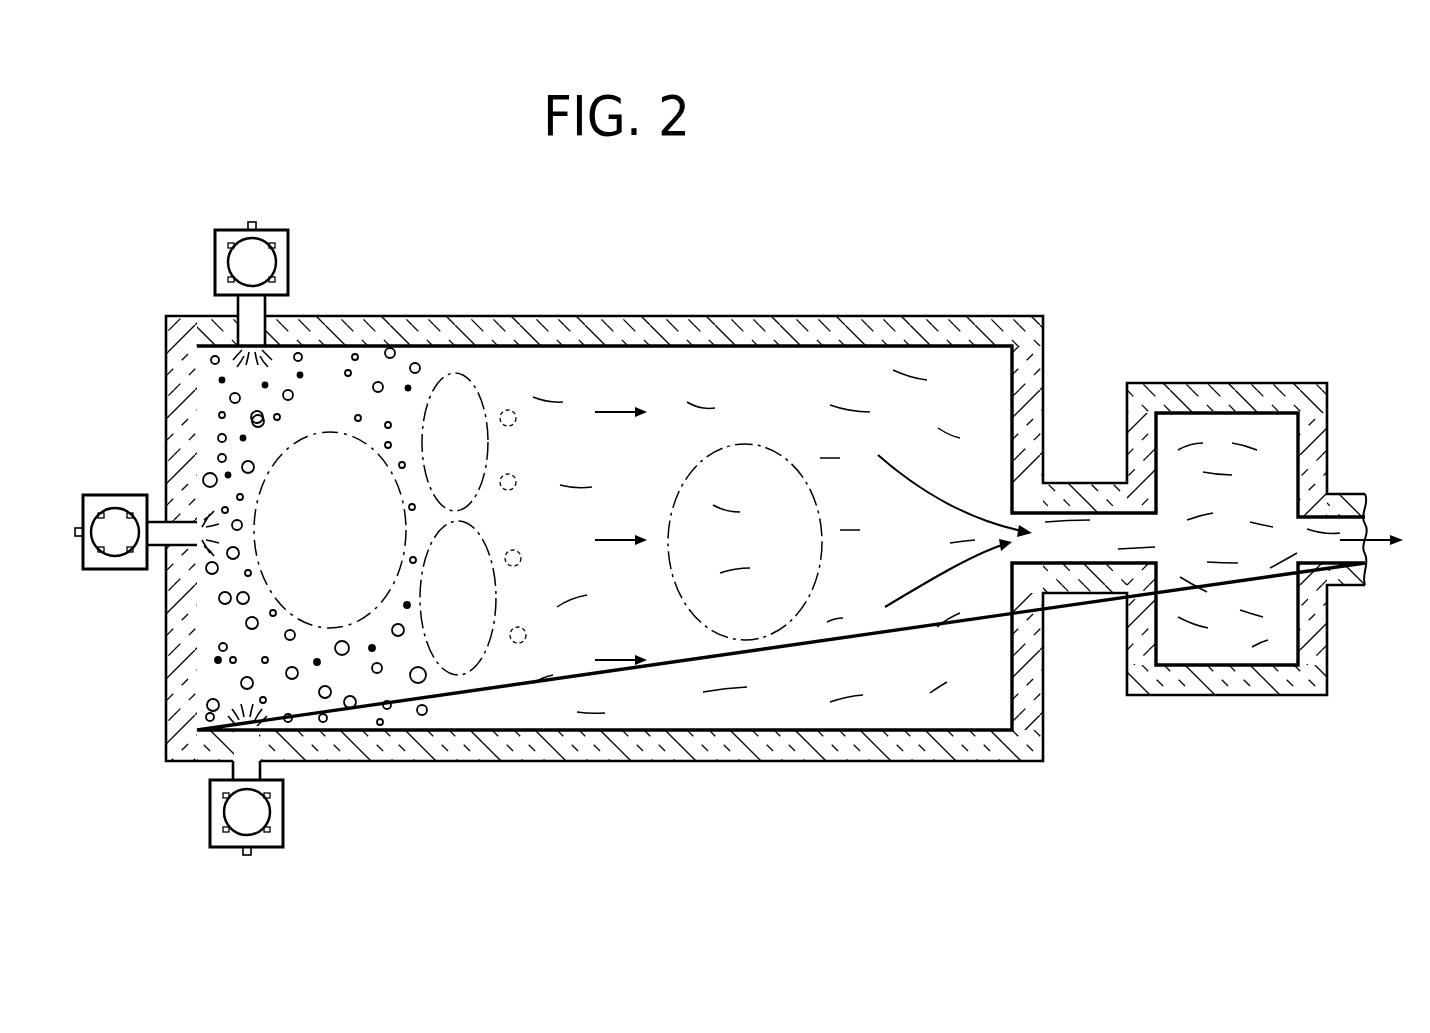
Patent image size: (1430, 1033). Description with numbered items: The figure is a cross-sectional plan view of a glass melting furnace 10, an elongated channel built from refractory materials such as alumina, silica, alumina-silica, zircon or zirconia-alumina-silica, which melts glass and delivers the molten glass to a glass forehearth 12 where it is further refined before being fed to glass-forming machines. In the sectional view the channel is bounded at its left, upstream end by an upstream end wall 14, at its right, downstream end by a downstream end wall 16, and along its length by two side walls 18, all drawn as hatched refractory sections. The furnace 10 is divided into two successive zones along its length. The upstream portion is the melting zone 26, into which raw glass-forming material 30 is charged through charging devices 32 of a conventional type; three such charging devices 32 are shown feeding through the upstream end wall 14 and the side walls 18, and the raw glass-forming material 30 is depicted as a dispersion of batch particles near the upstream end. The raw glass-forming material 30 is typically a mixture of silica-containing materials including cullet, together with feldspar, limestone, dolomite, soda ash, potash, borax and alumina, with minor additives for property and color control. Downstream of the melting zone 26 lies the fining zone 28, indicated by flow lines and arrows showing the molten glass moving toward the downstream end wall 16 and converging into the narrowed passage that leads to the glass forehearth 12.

The glass melting furnace 10 is at (936, 284).
The glass forehearth 12 is at (1416, 533).
The upstream end wall 14 is at (166, 634).
The downstream end wall 16 is at (1043, 372).
The side walls 18 is at (558, 316).
The melting zone 26 is at (370, 551).
The fining zone 28 is at (913, 551).
The raw glass-forming material 30 is at (263, 423).
The charging device 32 is at (288, 260).